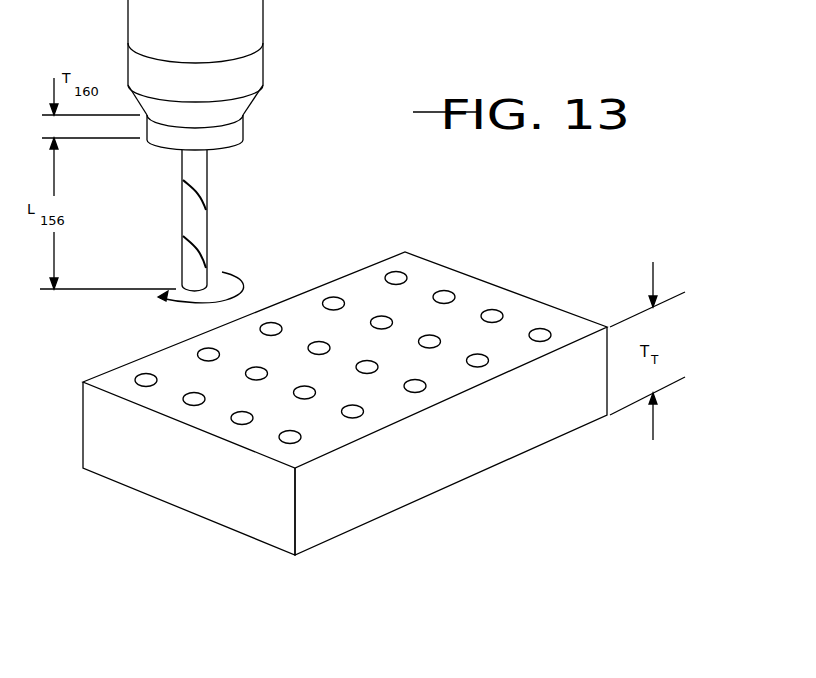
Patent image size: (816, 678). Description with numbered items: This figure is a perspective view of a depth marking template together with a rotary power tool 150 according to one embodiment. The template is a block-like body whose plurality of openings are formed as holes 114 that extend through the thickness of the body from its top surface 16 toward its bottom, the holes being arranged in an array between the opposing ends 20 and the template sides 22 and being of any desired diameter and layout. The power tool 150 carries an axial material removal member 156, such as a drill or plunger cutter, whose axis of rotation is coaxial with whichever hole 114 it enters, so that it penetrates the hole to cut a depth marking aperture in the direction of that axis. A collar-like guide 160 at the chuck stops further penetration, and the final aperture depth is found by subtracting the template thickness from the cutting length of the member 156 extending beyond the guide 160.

The rotary power tool 150 is at (263, 13).
The guide 160 is at (243, 125).
The axial material removal member 156 is at (210, 225).
The holes 114 is at (137, 372).
The top surface 16 is at (522, 303).
The opposing ends 20 is at (150, 475).
The template sides 22 is at (368, 494).